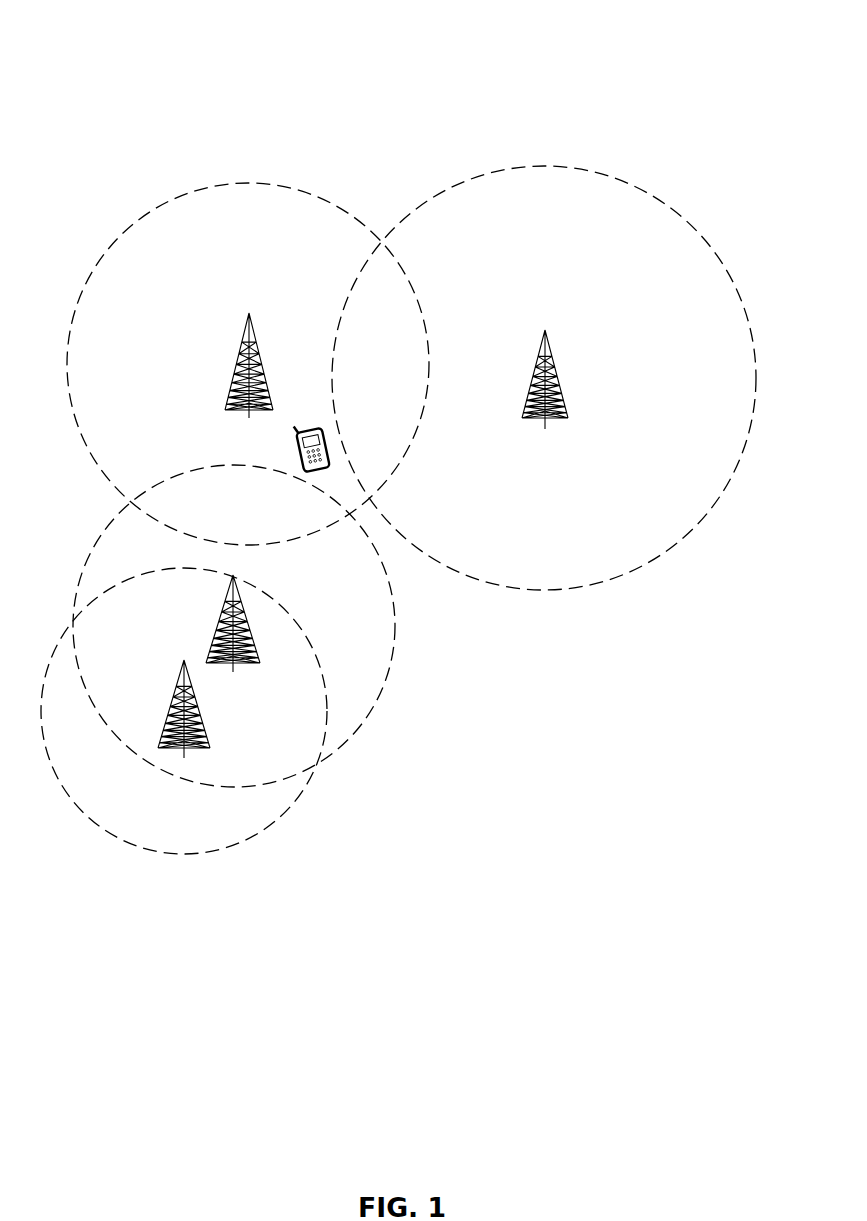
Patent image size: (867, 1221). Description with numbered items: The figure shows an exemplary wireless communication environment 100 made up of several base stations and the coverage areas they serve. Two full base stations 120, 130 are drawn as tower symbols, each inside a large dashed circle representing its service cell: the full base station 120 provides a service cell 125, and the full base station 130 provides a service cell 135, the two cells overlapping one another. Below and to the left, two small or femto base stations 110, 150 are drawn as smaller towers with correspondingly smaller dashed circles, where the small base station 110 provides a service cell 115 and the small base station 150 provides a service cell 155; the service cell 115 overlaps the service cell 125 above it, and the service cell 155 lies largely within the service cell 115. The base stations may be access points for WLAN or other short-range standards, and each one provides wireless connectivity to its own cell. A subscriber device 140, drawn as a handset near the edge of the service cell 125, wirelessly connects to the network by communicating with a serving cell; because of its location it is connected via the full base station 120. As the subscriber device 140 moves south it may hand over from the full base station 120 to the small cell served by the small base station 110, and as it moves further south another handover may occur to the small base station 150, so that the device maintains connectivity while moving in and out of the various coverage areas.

The wireless communication environment 100 is at (794, 37).
The small base station 110 is at (223, 612).
The service cell 115 is at (395, 647).
The full base station 120 is at (239, 346).
The service cell 125 is at (246, 183).
The full base station 130 is at (562, 380).
The service cell 135 is at (646, 192).
The subscriber device 140 is at (309, 430).
The small base station 150 is at (197, 700).
The service cell 155 is at (297, 795).